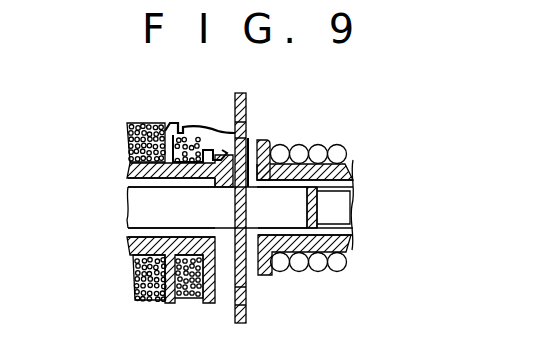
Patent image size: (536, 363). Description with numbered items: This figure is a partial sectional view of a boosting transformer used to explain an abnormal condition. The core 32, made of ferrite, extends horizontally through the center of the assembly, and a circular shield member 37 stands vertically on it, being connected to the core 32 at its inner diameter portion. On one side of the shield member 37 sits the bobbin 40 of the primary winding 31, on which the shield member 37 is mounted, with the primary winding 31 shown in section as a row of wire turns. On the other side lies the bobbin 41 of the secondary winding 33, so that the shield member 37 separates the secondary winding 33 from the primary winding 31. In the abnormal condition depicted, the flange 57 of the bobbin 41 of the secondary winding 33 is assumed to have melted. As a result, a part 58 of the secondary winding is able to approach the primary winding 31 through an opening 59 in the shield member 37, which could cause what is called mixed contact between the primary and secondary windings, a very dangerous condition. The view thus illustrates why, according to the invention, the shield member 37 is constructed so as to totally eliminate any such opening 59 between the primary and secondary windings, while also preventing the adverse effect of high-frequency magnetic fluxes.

The primary winding 31 is at (346, 153).
The core 32 is at (128, 207).
The secondary winding 33 is at (130, 166).
The shield member 37 is at (246, 107).
The bobbin 40 is at (351, 171).
The bobbin 41 is at (131, 176).
The flange 57 is at (195, 133).
The part of the secondary winding 58 is at (264, 139).
The opening 59 is at (250, 137).